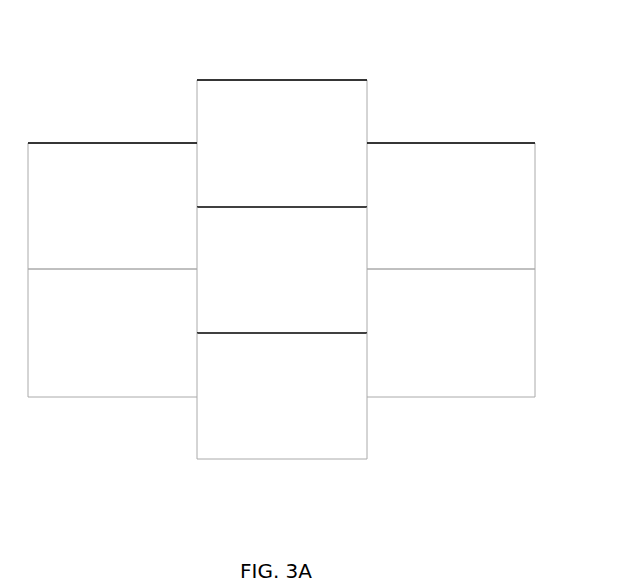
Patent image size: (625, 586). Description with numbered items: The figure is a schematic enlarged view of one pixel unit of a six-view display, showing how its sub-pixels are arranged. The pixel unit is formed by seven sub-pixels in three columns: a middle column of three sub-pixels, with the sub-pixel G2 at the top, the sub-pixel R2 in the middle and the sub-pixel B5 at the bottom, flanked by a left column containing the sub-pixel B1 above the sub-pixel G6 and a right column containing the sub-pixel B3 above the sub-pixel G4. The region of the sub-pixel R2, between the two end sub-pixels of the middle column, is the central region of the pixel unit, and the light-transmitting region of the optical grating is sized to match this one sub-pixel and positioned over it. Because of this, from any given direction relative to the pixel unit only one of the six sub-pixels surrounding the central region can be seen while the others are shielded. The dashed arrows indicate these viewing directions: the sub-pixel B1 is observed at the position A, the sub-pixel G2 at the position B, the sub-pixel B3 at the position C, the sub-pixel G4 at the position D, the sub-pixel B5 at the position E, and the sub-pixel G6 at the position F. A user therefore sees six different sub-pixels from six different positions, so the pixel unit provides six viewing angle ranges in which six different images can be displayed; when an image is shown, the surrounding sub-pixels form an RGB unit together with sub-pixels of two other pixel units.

The sub-pixel B1 is at (112, 206).
The sub-pixel G2 is at (282, 143).
The sub-pixel B3 is at (451, 206).
The sub-pixel R2 is at (282, 270).
The sub-pixel G6 is at (112, 333).
The sub-pixel G4 is at (451, 333).
The sub-pixel B5 is at (282, 396).
The position A is at (197, 245).
The position B is at (298, 207).
The position C is at (367, 225).
The position D is at (367, 297).
The position E is at (260, 333).
The position F is at (197, 318).